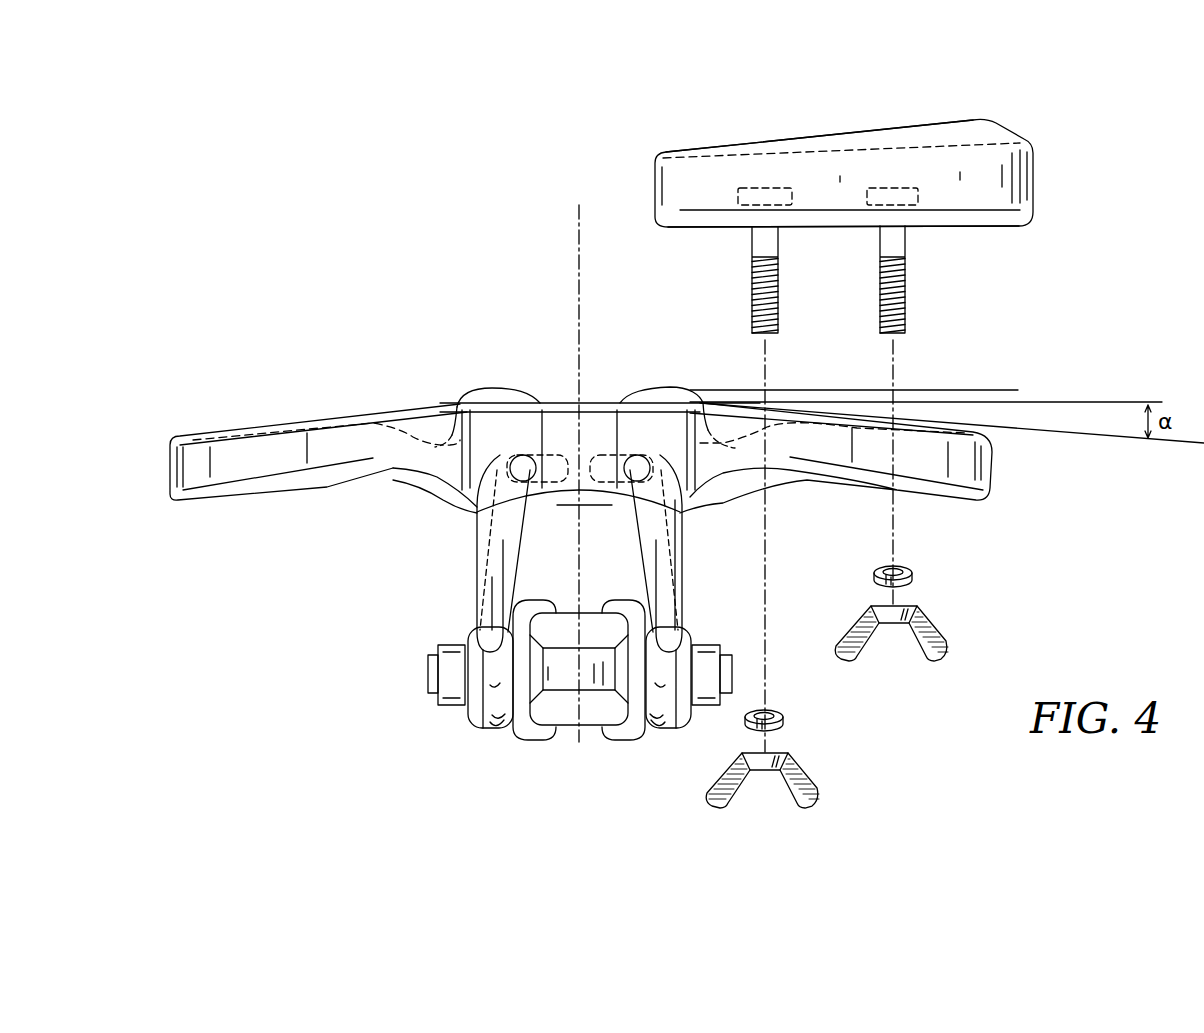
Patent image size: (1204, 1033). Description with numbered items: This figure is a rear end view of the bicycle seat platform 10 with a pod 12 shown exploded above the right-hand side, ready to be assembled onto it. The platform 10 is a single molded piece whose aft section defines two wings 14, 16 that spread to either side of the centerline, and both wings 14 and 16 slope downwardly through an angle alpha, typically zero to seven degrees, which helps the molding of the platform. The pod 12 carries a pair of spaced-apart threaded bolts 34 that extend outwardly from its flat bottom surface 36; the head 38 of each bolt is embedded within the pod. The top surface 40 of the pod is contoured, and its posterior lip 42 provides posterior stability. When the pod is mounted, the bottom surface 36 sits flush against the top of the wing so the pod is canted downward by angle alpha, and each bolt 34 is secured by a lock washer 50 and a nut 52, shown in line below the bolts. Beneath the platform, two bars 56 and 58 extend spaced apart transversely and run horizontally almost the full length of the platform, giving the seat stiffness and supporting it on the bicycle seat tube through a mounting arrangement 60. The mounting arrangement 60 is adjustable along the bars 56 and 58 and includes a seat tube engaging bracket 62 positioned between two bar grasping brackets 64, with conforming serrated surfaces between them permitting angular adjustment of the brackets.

The platform 10 is at (614, 421).
The pod 12 is at (822, 164).
The wing 14 is at (200, 487).
The wing 16 is at (985, 465).
The threaded bolt 34 is at (752, 297).
The bottom surface 36 is at (980, 227).
The bolt head 38 is at (765, 187).
The top surface 40 is at (915, 150).
The posterior lip 42 is at (985, 120).
The lock washer 50 is at (783, 720).
The nut 52 is at (818, 770).
The bar 56 is at (466, 570).
The bar 58 is at (682, 563).
The mounting arrangement 60 is at (571, 719).
The seat tube engaging bracket 62 is at (590, 727).
The bar grasping bracket 64 is at (480, 728).